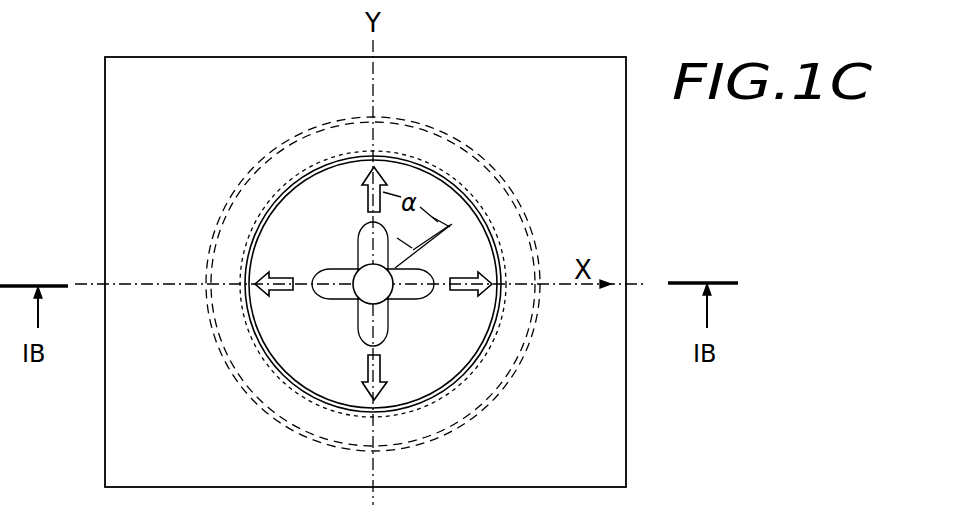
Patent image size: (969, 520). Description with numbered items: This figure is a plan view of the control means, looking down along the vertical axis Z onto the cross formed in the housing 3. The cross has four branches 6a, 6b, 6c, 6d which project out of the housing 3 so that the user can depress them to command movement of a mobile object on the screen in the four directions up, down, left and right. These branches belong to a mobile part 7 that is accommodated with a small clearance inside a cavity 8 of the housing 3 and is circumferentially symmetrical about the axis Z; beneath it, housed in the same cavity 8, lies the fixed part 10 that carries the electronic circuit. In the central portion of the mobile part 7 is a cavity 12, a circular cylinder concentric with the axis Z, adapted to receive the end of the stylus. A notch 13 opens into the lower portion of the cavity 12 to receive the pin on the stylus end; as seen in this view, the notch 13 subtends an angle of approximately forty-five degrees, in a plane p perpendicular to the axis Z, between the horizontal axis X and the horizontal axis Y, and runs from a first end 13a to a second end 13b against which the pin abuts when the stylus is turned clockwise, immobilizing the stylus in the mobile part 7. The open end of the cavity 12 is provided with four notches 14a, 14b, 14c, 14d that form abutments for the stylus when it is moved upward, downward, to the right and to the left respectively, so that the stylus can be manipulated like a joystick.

The housing 3 is at (612, 179).
The branch 6a is at (430, 178).
The branch 6b is at (302, 370).
The branch 6c is at (295, 193).
The branch 6d is at (458, 357).
The mobile part 7 is at (270, 340).
The cavity 8 is at (408, 155).
The fixed part 10 is at (453, 418).
The cavity 12 is at (335, 270).
The notch 13 is at (440, 217).
The groove end 13a is at (363, 240).
The second end 13b is at (405, 257).
The notch 14a is at (365, 250).
The notch 14b is at (370, 325).
The notch 14c is at (320, 293).
The notch 14d is at (423, 297).
The plane p is at (627, 458).